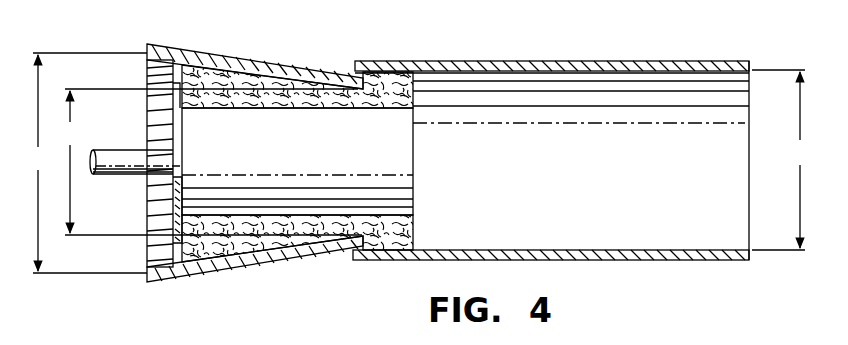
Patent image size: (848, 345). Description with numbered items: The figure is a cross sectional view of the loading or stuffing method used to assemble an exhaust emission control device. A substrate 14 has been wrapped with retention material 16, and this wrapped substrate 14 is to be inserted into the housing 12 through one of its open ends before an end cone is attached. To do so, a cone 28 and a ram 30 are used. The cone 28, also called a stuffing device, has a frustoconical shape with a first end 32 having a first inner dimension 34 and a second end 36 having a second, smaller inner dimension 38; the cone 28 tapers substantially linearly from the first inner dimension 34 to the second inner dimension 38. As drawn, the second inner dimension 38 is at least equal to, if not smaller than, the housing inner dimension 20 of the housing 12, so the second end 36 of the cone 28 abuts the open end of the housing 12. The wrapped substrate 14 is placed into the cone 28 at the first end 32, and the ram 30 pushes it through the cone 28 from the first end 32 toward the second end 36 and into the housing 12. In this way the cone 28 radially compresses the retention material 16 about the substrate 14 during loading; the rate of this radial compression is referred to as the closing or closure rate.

The housing 12 is at (566, 60).
The substrate 14 is at (296, 154).
The retention material 16 is at (283, 82).
The housing inner dimension 20 is at (782, 160).
The cone 28 is at (246, 53).
The ram 30 is at (140, 176).
The first end 32 is at (148, 283).
The first inner dimension 34 is at (85, 163).
The second end 36 is at (361, 238).
The second inner dimension 38 is at (209, 162).